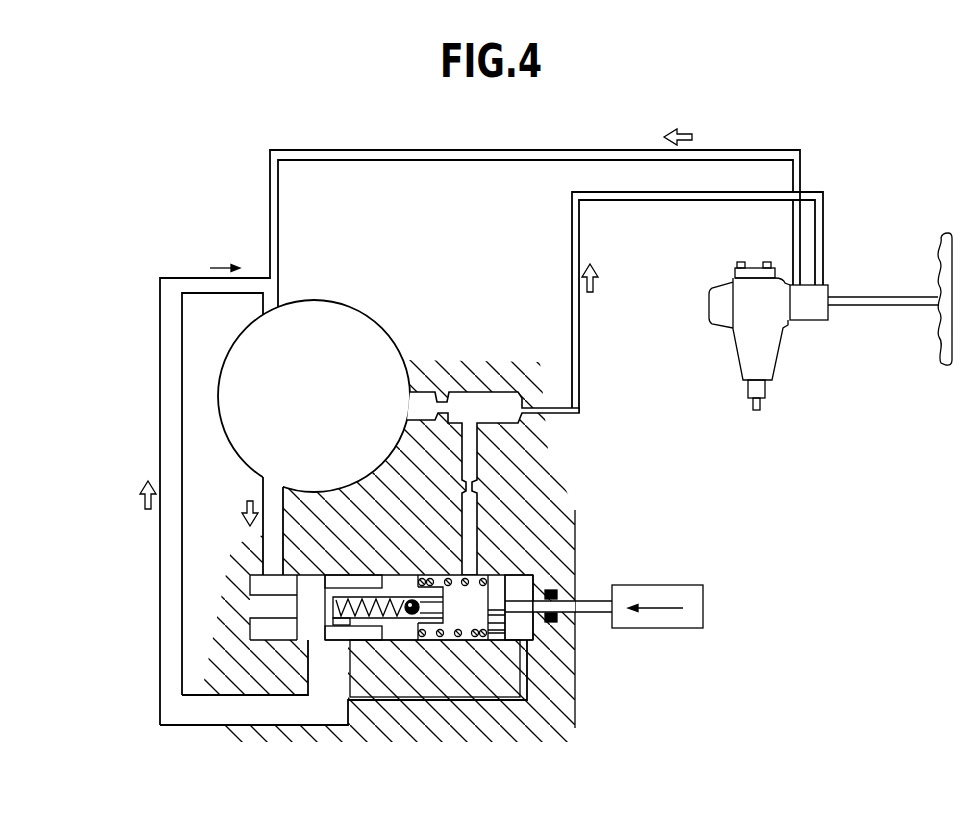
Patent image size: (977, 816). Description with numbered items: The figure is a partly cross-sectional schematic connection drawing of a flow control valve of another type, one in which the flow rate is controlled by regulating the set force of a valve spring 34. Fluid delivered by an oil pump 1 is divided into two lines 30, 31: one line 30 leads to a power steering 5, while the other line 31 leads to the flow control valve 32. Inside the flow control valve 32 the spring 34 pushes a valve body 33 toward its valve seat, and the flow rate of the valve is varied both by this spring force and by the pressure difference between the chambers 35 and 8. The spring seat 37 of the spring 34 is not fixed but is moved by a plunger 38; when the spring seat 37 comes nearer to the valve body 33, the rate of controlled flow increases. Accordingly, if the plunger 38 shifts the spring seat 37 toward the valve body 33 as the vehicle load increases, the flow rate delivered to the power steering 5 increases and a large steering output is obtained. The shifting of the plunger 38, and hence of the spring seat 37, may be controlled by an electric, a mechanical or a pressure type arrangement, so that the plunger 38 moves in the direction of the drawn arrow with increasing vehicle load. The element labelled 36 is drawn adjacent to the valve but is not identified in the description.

The oil pump 1 is at (357, 338).
The power steering 5 is at (765, 343).
The chamber 8 is at (270, 630).
The line 30 is at (492, 391).
The line 31 is at (284, 525).
The flow control valve 32 is at (365, 650).
The valve body 33 is at (317, 620).
The valve spring 34 is at (483, 578).
The chamber 35 is at (467, 618).
The plug 36 is at (522, 627).
The spring seat 37 is at (497, 593).
The plunger 38 is at (673, 597).